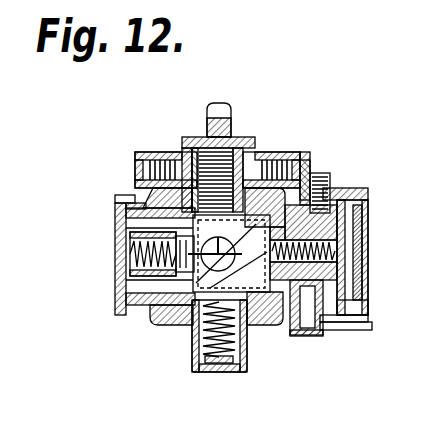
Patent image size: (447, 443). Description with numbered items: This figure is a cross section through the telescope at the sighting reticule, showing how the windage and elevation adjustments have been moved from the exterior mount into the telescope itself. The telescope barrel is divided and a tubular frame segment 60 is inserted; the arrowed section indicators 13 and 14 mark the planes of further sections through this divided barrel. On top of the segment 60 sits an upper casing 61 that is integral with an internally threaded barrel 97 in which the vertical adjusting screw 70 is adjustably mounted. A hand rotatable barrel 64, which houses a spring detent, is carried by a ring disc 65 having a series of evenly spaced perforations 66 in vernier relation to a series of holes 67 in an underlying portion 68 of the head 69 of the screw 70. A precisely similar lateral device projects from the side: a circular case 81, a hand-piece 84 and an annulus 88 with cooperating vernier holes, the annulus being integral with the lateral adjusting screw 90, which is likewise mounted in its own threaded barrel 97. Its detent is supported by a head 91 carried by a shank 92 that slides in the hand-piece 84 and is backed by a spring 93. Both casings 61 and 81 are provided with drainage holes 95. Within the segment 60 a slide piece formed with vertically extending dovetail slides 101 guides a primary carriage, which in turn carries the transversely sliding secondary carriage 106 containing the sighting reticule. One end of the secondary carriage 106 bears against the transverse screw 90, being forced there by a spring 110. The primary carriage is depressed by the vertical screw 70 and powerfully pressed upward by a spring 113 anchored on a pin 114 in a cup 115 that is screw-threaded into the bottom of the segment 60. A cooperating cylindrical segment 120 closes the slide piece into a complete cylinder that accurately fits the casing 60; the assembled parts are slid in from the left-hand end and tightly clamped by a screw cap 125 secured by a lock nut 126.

The section line 13- 13 is at (219, 103).
The section line 14- 14 is at (118, 255).
The tubular frame segment 60 is at (162, 322).
The upper casing 61 is at (300, 152).
The hand rotatable barrel 64 is at (233, 117).
The ring disc 65 is at (262, 152).
The perforations 66 is at (155, 150).
The holes 67 is at (150, 156).
The underlying portion 68 is at (300, 164).
The head 69 is at (258, 140).
The vertical adjusting screw 70 is at (189, 147).
The circular case 81 is at (350, 330).
The hand-piece 84 is at (356, 272).
The annulus 88 is at (322, 332).
The lateral adjusting screw 90 is at (368, 215).
The head 91 is at (365, 324).
The shank 92 is at (370, 310).
The spring 93 is at (340, 248).
The drainage holes 95 is at (135, 162).
The internally threaded barrels 97 is at (150, 194).
The dovetail slides 101 is at (262, 326).
The secondary carriage 106 is at (118, 234).
The spring 110 is at (120, 290).
The spring 113 is at (196, 335).
The pin 114 is at (230, 360).
The cup 115 is at (201, 372).
The cylindrical segment 120 is at (157, 330).
The screw cap 125 is at (115, 220).
The lock nut 126 is at (150, 196).